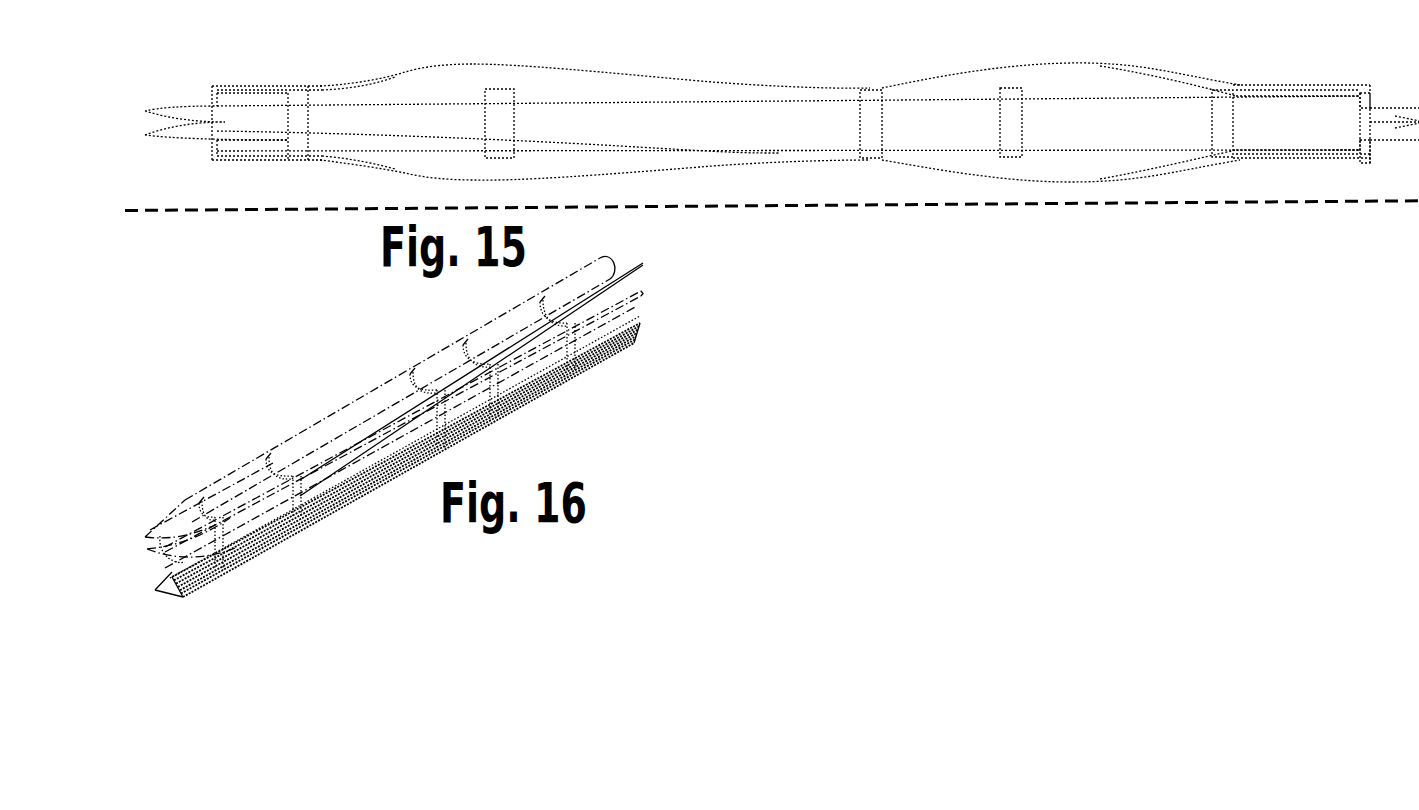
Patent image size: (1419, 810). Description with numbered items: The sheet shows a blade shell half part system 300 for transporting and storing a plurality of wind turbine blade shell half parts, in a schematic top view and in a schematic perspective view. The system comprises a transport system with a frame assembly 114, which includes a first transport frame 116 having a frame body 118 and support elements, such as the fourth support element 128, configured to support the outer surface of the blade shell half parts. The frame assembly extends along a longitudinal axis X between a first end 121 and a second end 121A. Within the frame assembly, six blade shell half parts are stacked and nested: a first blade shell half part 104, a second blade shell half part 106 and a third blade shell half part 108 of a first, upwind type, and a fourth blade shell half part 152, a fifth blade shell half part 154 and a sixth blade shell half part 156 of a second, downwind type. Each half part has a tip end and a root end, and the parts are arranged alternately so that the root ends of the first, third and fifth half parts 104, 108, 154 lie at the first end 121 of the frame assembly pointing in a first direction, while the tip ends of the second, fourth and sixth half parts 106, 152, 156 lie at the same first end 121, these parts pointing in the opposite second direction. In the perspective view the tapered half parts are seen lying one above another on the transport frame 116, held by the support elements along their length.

In FIG. 15, the frame body 118 is at (885, 7).
In FIG. 15, the fourth support element 128 is at (980, 7).
In FIG. 15, the frame assembly 114 is at (1080, 7).
In FIG. 15, the first end of frame assembly 121 is at (212, 92).
In FIG. 15, the second end of frame assembly 121A is at (1368, 92).
In FIG. 15, the first transport frame 116 is at (1318, 158).
In FIG. 16, the first transport frame 116 is at (602, 360).
In FIG. 15, the longitudinal axis X is at (1396, 202).
In FIG. 16, the blade shell half part system 300 is at (340, 382).
In FIG. 16, the sixth blade shell half part 156 is at (397, 406).
In FIG. 16, the fifth blade shell half part 154 is at (643, 264).
In FIG. 16, the third blade shell half part 108 is at (641, 294).
In FIG. 16, the first blade shell half part 104 is at (633, 316).
In FIG. 16, the fourth blade shell half part 152 is at (167, 540).
In FIG. 16, the second blade shell half part 106 is at (155, 590).